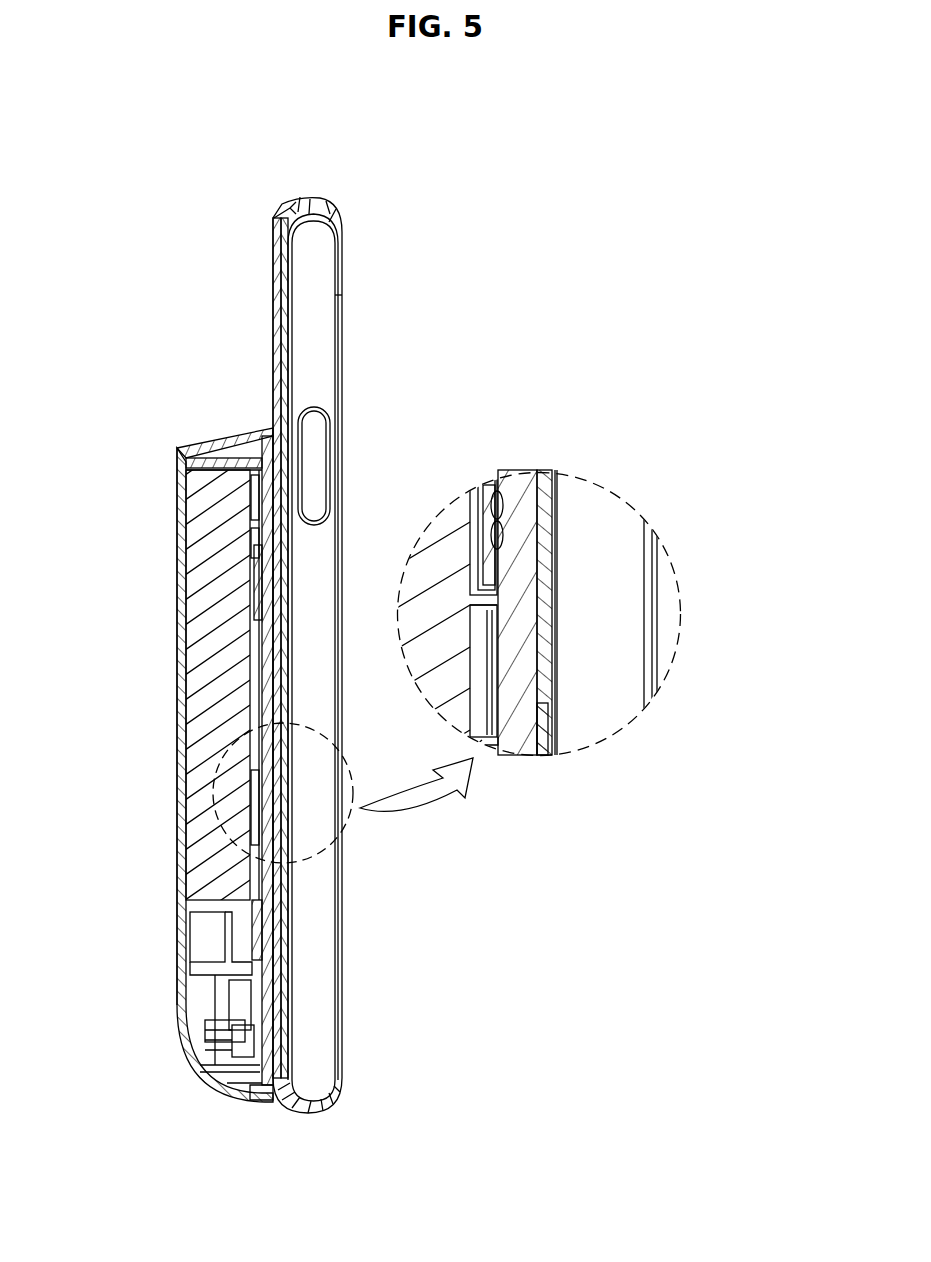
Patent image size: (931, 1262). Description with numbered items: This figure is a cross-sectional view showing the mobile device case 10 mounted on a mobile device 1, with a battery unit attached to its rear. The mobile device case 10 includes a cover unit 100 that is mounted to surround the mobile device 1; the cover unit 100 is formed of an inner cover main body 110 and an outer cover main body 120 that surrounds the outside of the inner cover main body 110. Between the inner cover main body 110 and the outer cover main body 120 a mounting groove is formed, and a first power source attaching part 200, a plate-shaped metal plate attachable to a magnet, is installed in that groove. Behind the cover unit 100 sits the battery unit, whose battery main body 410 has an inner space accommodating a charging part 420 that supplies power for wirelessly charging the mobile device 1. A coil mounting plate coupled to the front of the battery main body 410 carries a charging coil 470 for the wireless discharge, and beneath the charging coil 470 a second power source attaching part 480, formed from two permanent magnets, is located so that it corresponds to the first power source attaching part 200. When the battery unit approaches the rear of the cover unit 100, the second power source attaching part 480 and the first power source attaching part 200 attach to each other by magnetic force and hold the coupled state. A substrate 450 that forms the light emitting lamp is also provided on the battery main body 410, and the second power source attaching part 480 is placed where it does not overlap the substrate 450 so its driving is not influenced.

The mobile device 1 is at (315, 340).
The mobile device case 10 is at (178, 258).
The cover unit 100 is at (647, 612).
The inner cover main body 110 is at (545, 548).
The outer cover main body 120 is at (530, 603).
The first power source attaching part 200 is at (540, 738).
The battery main body 410 is at (182, 580).
The charging part 420 is at (200, 652).
The substrate 450 is at (264, 1018).
The charging coil 470 is at (500, 500).
The second power source attaching part 480 is at (248, 932).